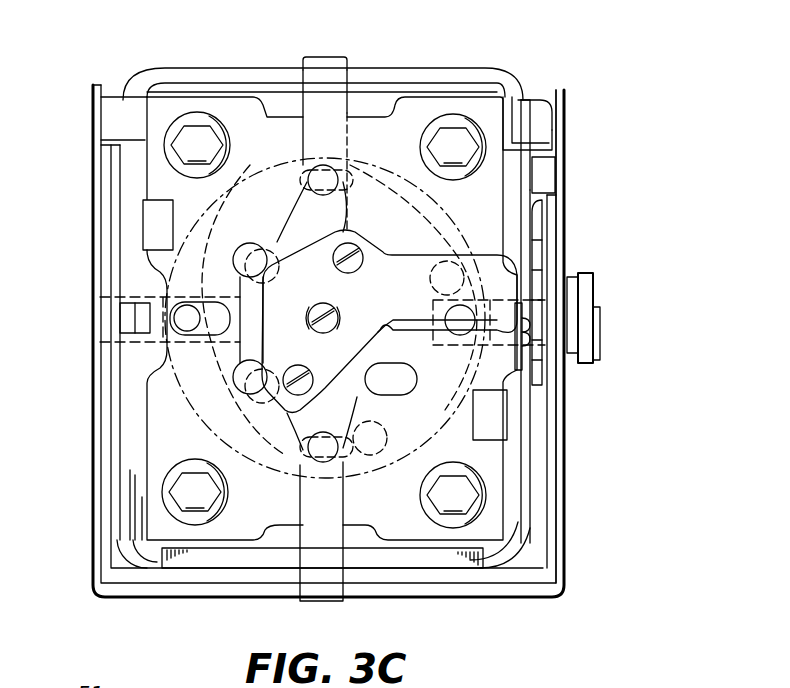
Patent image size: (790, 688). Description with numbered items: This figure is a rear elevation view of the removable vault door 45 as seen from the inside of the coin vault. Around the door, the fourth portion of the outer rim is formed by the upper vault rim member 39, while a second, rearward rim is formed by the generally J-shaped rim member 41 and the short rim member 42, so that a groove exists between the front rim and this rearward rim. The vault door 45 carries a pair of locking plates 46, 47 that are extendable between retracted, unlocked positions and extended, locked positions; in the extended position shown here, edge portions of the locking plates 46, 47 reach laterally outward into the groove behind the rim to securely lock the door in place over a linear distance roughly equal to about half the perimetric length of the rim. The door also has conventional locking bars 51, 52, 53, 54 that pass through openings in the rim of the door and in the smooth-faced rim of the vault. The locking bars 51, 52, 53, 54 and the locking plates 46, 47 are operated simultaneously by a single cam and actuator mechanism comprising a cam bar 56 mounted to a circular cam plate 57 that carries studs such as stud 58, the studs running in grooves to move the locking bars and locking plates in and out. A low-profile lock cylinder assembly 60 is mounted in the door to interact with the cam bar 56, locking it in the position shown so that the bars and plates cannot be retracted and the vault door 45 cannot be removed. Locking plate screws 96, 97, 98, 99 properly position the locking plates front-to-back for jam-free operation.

The upper vault rim member 39 is at (196, 92).
The J-shaped rim member 41 is at (120, 556).
The short rim member 42 is at (547, 173).
The vault door 45 is at (413, 597).
The locking plate 46 is at (163, 112).
The locking plate 47 is at (408, 127).
The locking bar 51 is at (336, 66).
The locking bar 52 is at (118, 318).
The locking bar 53 is at (320, 598).
The locking bar 54 is at (535, 323).
The cam bar 56 is at (417, 268).
The circular cam plate 57 is at (253, 193).
The stud 58 is at (318, 176).
The lock cylinder assembly 60 is at (572, 333).
The locking plate screw 96 is at (180, 473).
The locking plate screw 97 is at (430, 508).
The locking plate screw 98 is at (180, 160).
The locking plate screw 99 is at (430, 156).